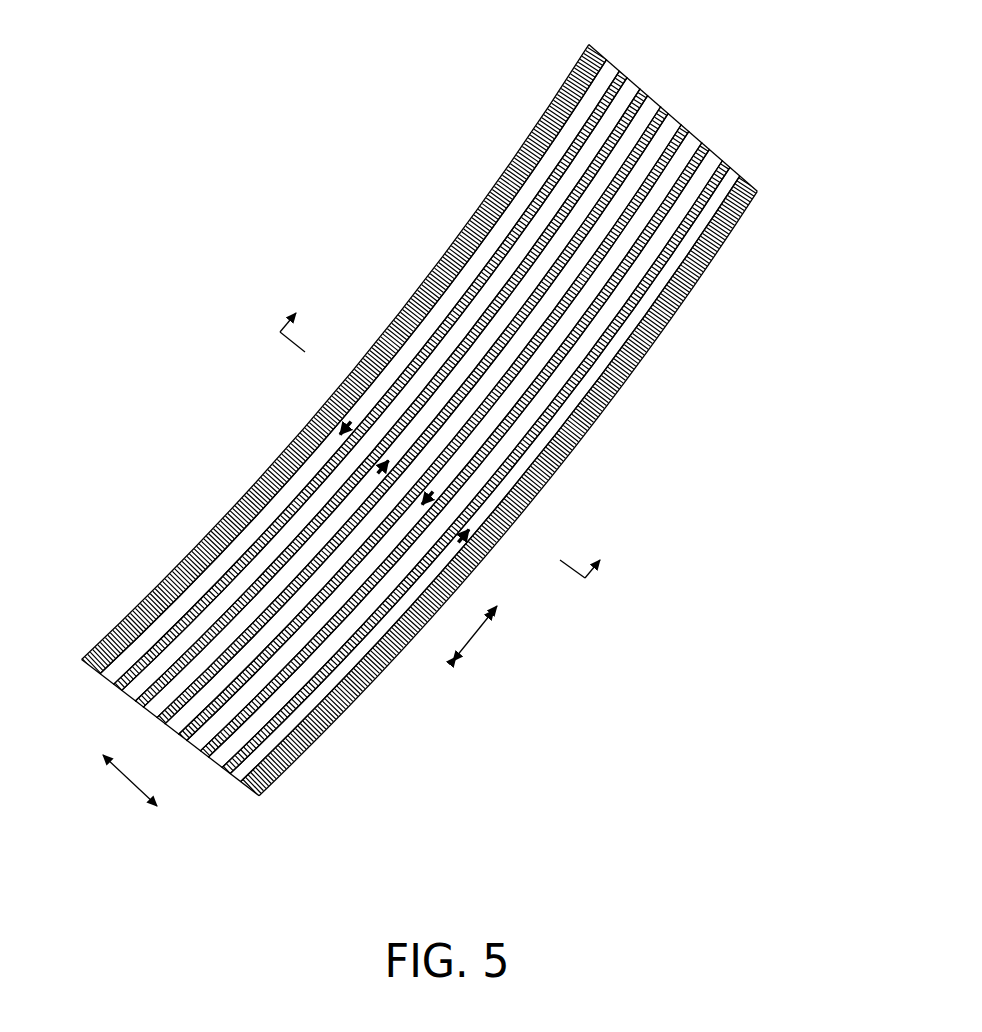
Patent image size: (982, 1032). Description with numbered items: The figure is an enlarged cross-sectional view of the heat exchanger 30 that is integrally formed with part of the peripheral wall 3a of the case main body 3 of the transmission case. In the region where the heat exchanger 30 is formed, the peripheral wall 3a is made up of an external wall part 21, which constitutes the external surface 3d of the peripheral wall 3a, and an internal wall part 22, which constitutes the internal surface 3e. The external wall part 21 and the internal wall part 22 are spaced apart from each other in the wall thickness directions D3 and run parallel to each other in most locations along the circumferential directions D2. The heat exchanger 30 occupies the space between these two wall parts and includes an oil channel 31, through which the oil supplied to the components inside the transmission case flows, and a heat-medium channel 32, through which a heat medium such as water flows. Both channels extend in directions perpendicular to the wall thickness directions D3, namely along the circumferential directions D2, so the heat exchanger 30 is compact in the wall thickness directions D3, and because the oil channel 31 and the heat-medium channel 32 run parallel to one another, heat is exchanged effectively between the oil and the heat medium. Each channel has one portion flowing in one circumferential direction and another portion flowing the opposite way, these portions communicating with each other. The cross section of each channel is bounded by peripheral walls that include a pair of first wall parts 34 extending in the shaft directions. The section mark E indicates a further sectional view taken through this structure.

The case main body 3 is at (449, 440).
The external wall part 21 is at (665, 340).
The internal wall part 22 is at (480, 203).
The heat exchanger 30 is at (661, 92).
The oil channel 31 is at (590, 153).
The heat-medium channel 32 is at (455, 358).
The first wall parts 34 is at (292, 546).
The peripheral wall 3a is at (281, 788).
The external surface 3d is at (312, 760).
The internal surface 3e is at (110, 622).
The circumferential directions D2 is at (478, 632).
The wall thickness directions D3 is at (128, 783).
The section line E is at (448, 429).